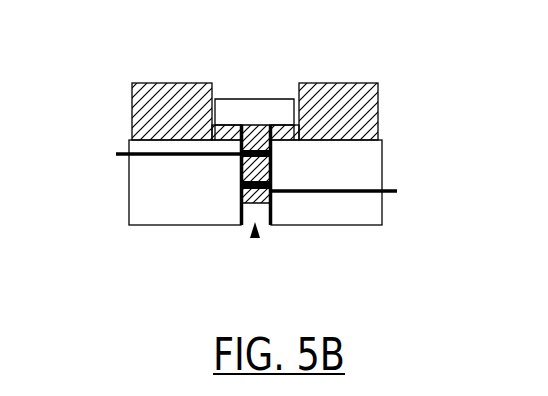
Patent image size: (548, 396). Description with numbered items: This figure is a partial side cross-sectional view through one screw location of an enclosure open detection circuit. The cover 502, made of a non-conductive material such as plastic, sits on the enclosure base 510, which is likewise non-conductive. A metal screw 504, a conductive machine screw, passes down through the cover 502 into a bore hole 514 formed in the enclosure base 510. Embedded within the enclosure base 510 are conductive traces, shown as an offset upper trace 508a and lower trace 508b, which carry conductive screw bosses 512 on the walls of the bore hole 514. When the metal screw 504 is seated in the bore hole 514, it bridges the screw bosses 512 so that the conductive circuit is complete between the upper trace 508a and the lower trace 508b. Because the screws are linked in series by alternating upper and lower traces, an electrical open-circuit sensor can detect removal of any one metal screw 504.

The cover 502 is at (379, 108).
The metal screw 504 is at (257, 112).
The upper trace 508a is at (133, 158).
The lower trace 508b is at (383, 211).
The enclosure base 510 is at (155, 213).
The conductive screw boss 512 is at (238, 188).
The bore hole 514 is at (254, 243).